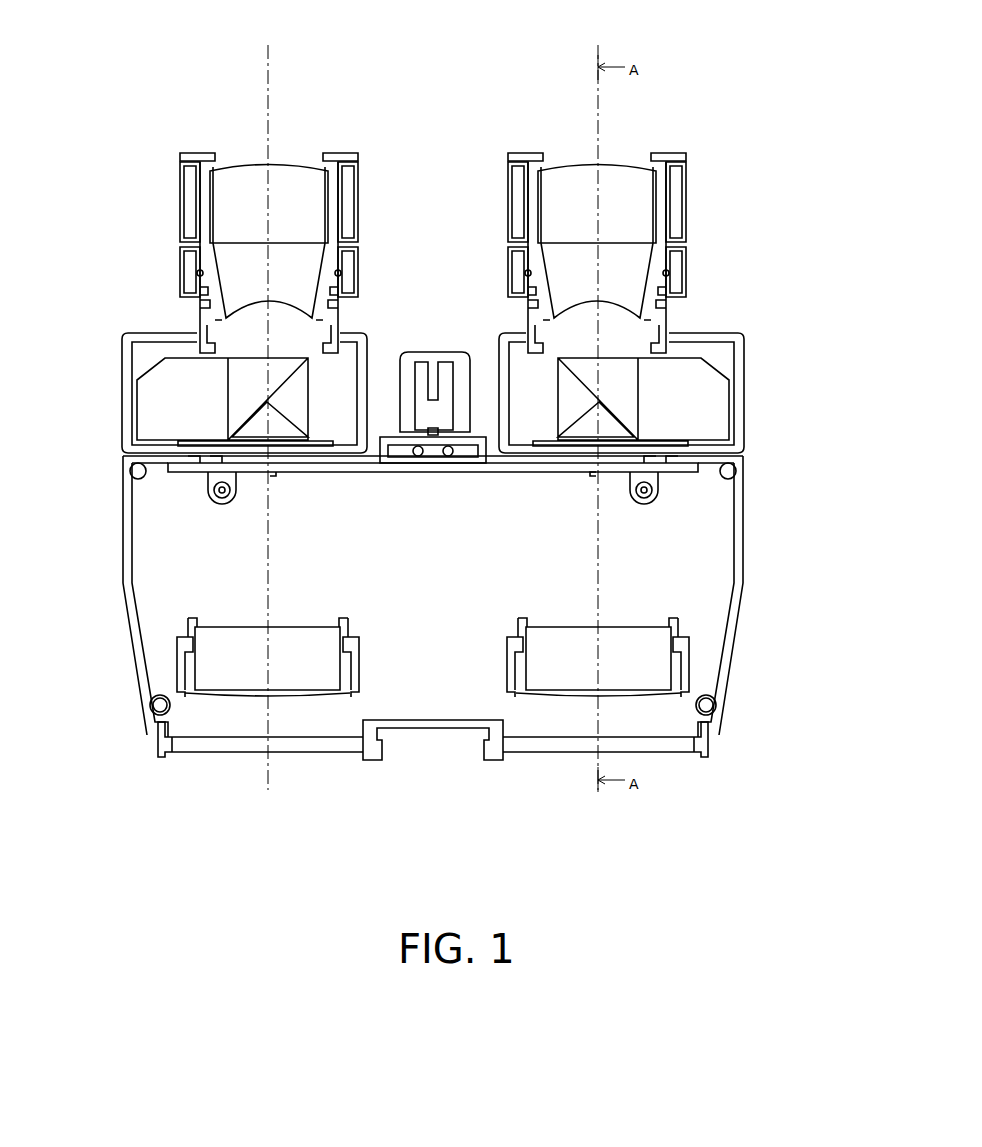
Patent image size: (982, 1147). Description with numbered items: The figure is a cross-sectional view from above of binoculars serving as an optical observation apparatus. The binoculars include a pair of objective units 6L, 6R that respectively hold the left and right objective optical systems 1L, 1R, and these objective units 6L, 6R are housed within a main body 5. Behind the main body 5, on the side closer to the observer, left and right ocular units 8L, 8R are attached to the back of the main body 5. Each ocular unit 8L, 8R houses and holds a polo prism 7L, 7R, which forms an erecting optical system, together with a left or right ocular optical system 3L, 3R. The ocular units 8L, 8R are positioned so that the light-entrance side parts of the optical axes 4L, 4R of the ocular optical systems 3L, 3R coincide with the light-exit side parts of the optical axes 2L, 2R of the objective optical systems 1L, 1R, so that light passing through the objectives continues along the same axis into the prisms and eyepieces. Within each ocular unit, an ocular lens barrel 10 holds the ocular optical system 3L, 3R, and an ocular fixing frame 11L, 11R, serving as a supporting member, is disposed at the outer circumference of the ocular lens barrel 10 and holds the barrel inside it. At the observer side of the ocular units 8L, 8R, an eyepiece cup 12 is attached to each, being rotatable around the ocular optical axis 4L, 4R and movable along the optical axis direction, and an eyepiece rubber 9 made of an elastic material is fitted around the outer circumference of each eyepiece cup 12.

The left objective optical system 1L is at (313, 657).
The right objective optical system 1R is at (557, 658).
The optical axis of left objective optical system 2L is at (272, 593).
The optical axis of right objective optical system 2R is at (597, 593).
The left ocular optical system 3L is at (297, 222).
The right ocular optical system 3R is at (575, 220).
The optical axis of left ocular optical system 4L is at (268, 262).
The optical axis of right ocular optical system 4R is at (600, 263).
The main body 5 is at (743, 493).
The left objective unit 6L is at (153, 740).
The right objective unit 6R is at (713, 740).
The left polo prism 7L is at (177, 388).
The right polo prism 7R is at (690, 388).
The left ocular unit 8L is at (130, 407).
The right ocular unit 8R is at (743, 410).
The eyepiece rubber 9 is at (182, 232).
The ocular lens barrel 10 is at (545, 243).
The ocular fixing frame 11L is at (195, 161).
The ocular fixing frame 11R is at (672, 161).
The eyepiece cup 12 is at (192, 190).